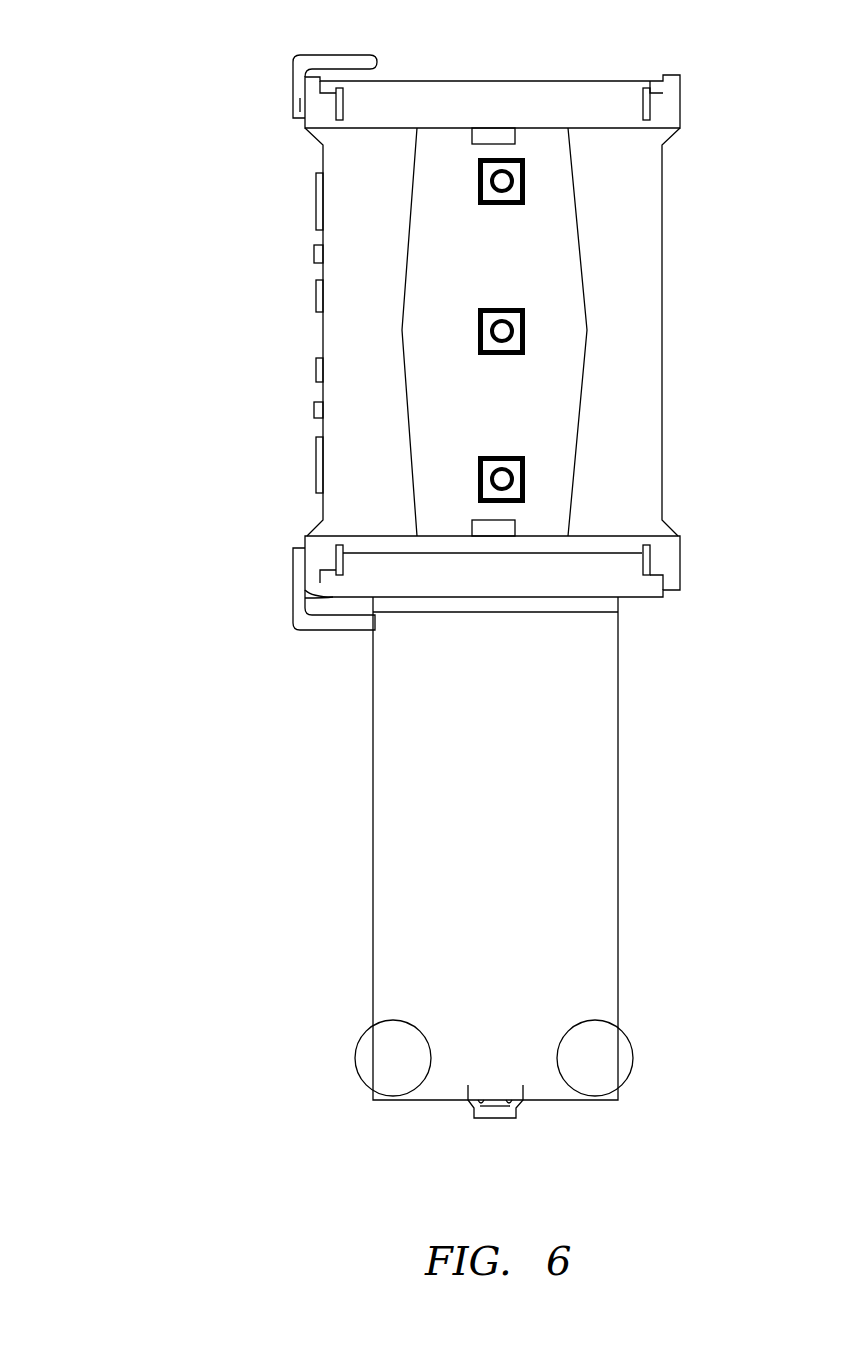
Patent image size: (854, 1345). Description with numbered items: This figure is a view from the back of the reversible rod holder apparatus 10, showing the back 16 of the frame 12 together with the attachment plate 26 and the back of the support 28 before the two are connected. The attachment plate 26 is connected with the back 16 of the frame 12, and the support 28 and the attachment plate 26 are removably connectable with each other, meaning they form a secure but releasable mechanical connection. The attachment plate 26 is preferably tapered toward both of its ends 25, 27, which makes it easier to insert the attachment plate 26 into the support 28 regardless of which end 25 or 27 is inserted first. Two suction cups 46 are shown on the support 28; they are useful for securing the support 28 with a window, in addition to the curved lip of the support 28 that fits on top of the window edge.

The reversible rod holder apparatus 10 is at (134, 44).
The frame 12 is at (322, 160).
The back 16 is at (345, 350).
The end 25 is at (542, 150).
The attachment plate 26 is at (542, 322).
The end 27 is at (550, 513).
The support 28 is at (602, 788).
The suction cups 46 is at (378, 1063).